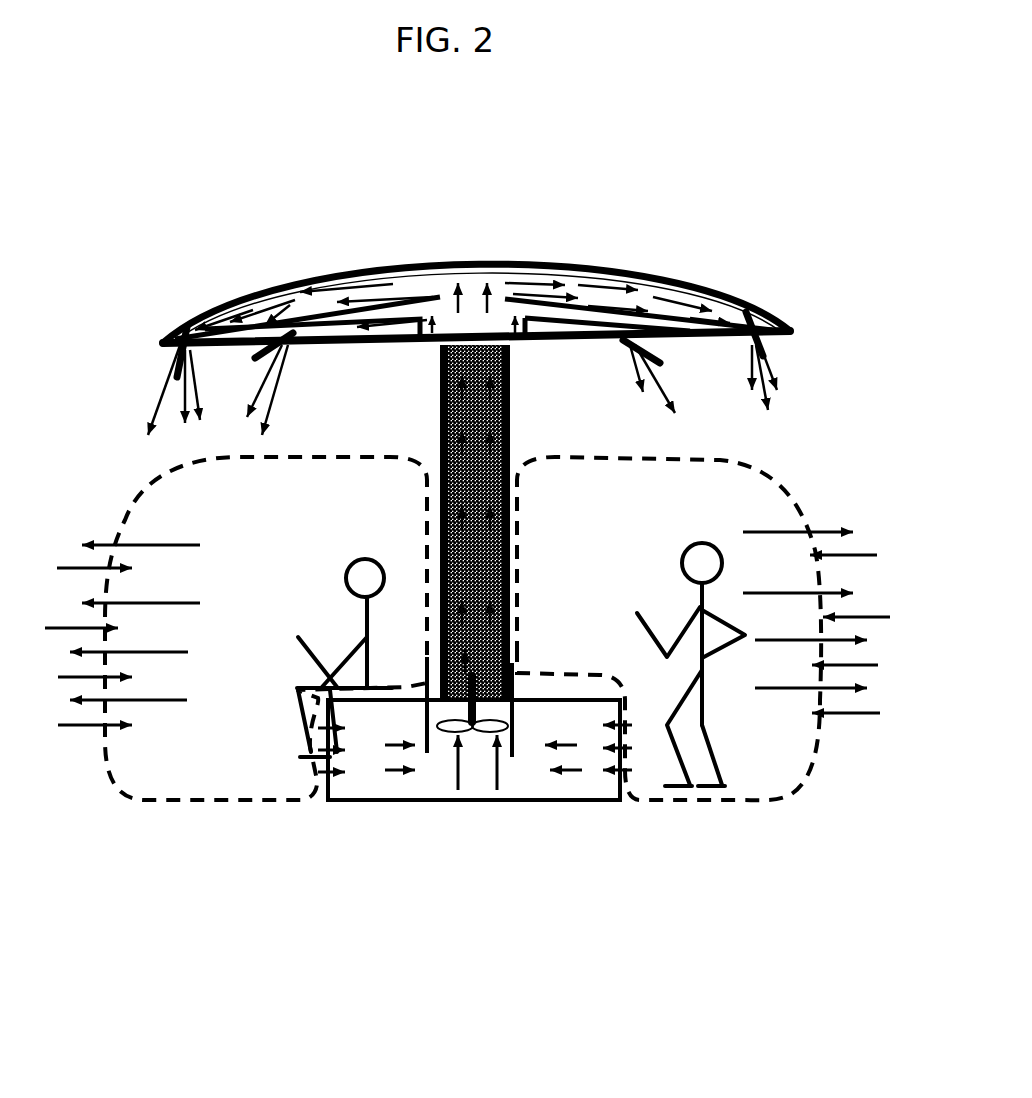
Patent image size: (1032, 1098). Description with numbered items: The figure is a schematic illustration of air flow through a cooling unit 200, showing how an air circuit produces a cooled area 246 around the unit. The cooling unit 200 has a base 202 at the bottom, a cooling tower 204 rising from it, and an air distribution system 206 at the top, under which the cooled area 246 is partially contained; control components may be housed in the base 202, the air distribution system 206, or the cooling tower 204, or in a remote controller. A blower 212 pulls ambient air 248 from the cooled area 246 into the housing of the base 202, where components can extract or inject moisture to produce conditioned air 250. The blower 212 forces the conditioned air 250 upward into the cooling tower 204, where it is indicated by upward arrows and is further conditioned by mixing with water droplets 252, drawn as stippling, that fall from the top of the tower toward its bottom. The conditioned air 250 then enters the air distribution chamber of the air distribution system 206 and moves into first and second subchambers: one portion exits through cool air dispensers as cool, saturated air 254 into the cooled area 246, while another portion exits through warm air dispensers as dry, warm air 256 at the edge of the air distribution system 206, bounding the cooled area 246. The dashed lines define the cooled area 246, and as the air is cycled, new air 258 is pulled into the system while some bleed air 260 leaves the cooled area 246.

The cooling unit 200 is at (776, 222).
The base 202 is at (540, 803).
The cooling tower 204 is at (512, 423).
The air distribution system 206 is at (222, 264).
The blower 212 is at (473, 745).
The cooled area 246 is at (215, 767).
The ambient air 248 is at (627, 775).
The conditioned air 250 is at (457, 770).
The water droplets 252 is at (444, 488).
The cool, saturated air 254 is at (268, 406).
The dry, warm air 256 is at (158, 402).
The new air 258 is at (77, 722).
The bleed air 260 is at (112, 540).